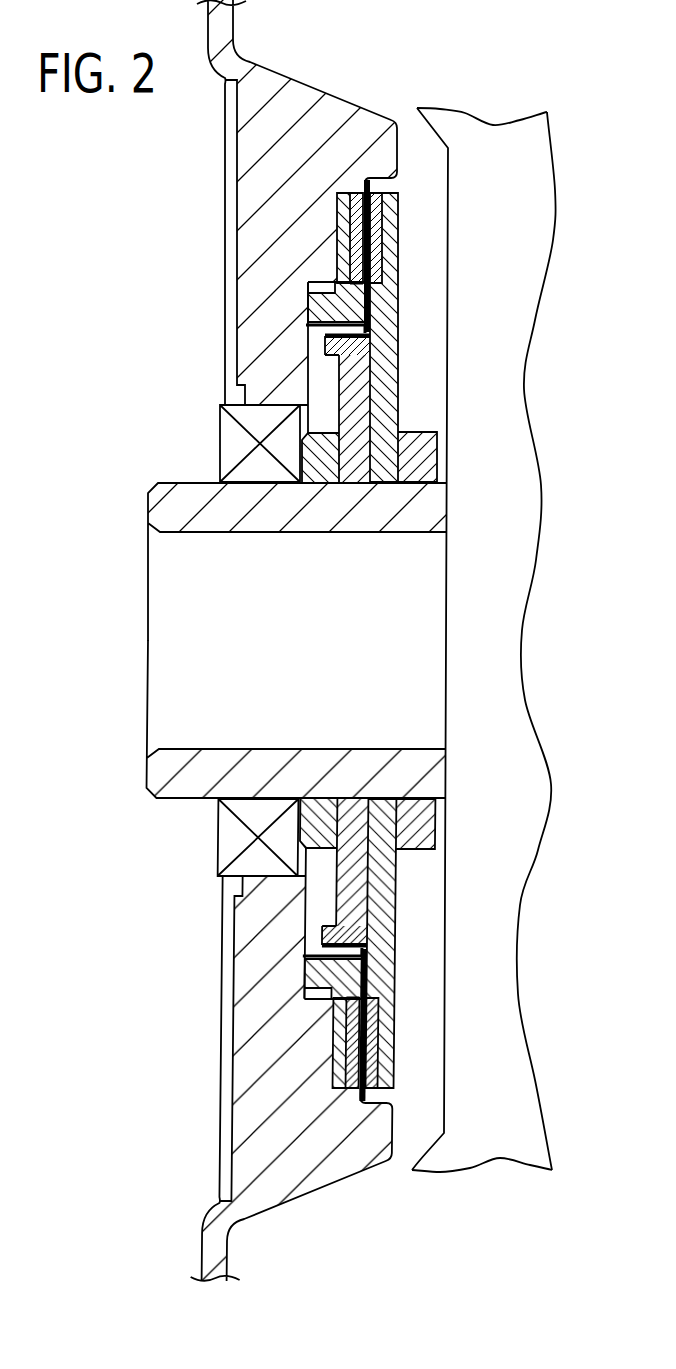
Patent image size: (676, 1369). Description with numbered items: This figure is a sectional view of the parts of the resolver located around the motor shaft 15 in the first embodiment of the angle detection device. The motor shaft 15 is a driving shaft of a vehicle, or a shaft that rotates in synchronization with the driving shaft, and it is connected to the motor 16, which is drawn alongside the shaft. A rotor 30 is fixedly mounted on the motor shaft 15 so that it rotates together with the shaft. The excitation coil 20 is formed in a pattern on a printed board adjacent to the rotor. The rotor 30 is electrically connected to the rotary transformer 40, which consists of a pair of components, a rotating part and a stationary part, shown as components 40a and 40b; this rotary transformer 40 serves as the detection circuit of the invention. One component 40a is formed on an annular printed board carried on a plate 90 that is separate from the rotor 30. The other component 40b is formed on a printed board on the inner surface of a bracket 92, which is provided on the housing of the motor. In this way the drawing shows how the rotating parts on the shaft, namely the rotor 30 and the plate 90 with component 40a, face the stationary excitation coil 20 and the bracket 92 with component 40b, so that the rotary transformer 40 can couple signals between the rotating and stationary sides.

The motor shaft 15 is at (170, 503).
The motor 16 is at (497, 147).
The excitation coil 20 is at (365, 250).
The rotor 30 is at (382, 380).
The rotary transformer 40 is at (308, 325).
The component of the rotary transformer 40a is at (338, 367).
The component of the rotary transformer 40b is at (318, 300).
The plate 90 is at (350, 419).
The bracket 92 is at (337, 227).